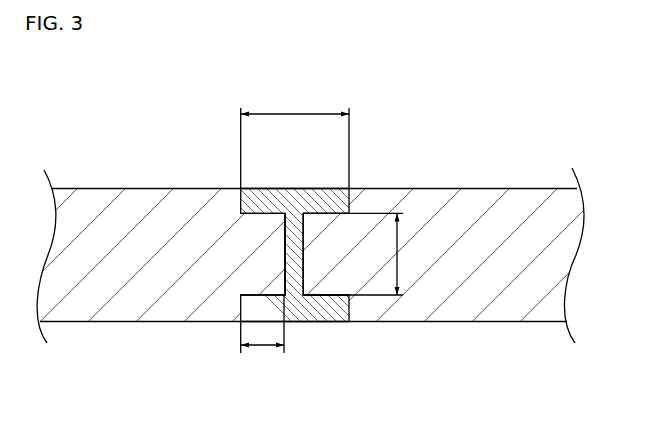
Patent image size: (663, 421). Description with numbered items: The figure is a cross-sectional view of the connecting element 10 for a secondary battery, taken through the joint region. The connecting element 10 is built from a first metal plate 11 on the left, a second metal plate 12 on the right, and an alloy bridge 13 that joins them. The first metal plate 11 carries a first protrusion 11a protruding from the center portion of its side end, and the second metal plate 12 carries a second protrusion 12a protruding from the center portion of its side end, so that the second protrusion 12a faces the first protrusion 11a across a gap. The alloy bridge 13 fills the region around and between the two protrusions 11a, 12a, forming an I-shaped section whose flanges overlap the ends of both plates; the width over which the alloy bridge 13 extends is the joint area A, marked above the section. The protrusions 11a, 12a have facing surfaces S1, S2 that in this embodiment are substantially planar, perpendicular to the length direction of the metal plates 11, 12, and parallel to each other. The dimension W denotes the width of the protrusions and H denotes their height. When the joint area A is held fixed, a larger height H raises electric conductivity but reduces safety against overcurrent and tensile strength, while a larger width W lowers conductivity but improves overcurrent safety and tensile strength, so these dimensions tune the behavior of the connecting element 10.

The connecting element 10 is at (331, 230).
The first metal plate 11 is at (172, 194).
The first protrusion 11a is at (270, 236).
The second metal plate 12 is at (461, 193).
The second protrusion 12a is at (320, 236).
The alloy bridge 13 is at (295, 192).
The facing surface S1 is at (284, 268).
The facing surface S2 is at (304, 245).
The joint area A is at (295, 141).
The width of the protrusions W is at (360, 254).
The height of the protrusions H is at (262, 333).